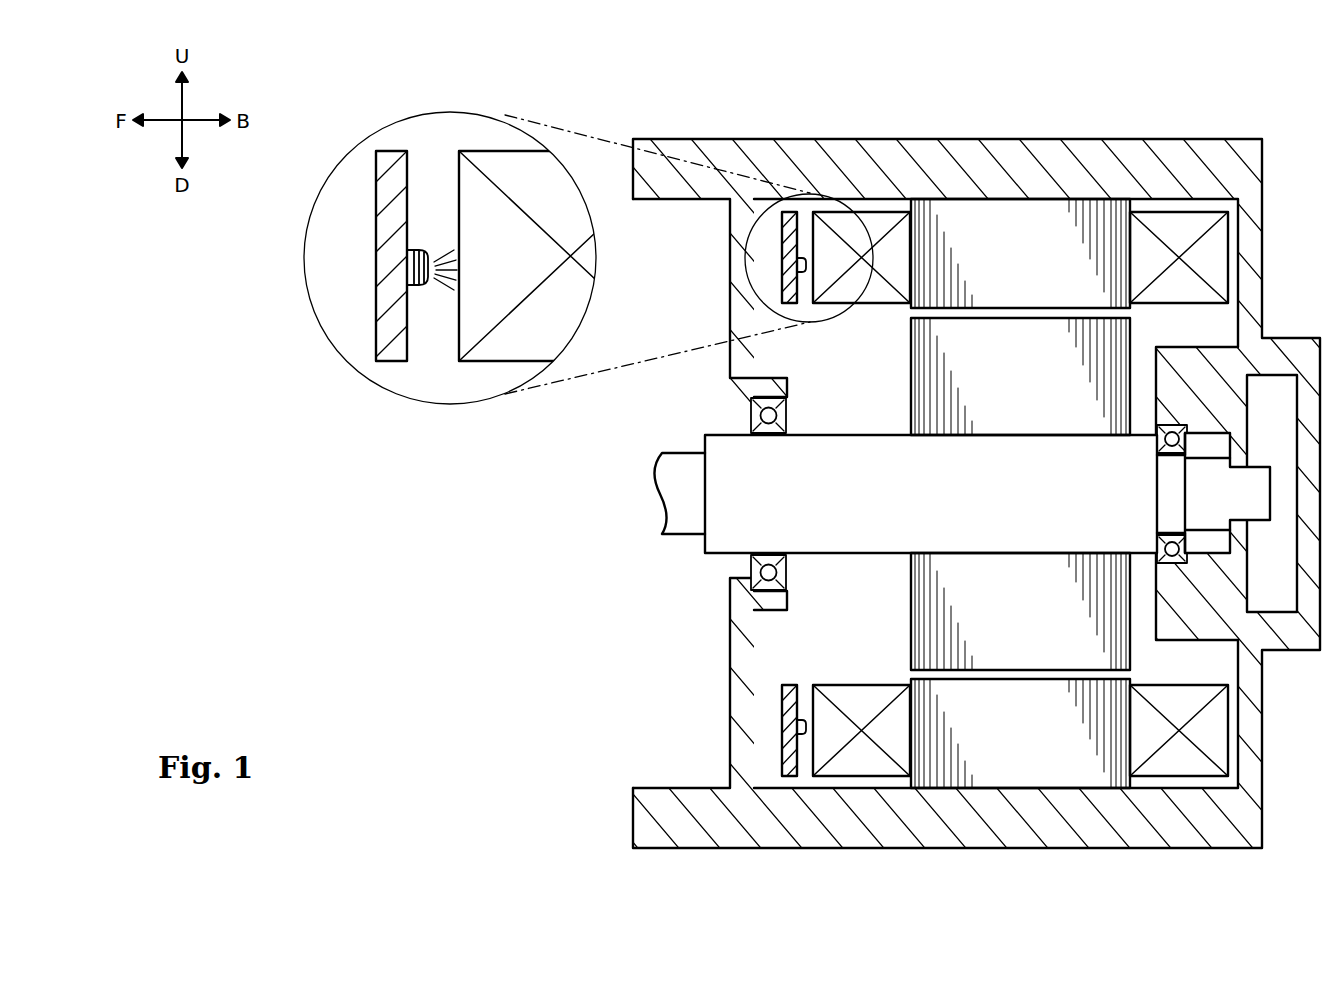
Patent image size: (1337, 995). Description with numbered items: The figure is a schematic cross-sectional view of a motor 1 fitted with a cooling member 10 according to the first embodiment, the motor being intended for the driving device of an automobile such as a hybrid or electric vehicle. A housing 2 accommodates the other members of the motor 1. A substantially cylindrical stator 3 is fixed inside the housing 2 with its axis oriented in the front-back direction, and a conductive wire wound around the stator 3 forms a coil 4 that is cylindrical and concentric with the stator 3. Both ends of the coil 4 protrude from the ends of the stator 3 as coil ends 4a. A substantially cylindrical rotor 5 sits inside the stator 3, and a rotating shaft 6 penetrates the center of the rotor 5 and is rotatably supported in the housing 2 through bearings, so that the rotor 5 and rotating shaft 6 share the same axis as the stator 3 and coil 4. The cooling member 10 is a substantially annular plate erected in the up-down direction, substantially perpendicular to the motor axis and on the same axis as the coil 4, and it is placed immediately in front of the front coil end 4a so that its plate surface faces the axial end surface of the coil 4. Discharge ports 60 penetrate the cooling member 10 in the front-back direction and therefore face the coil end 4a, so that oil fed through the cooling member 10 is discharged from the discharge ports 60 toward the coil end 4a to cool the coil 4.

The motor 1 is at (668, 474).
The housing 2 is at (1112, 132).
The stator 3 is at (1007, 213).
The coil 4 is at (844, 432).
The coil end 4a is at (868, 222).
The rotor 5 is at (913, 635).
The rotating shaft 6 is at (724, 538).
The cooling member 10 is at (762, 222).
The discharge port 60 is at (437, 234).